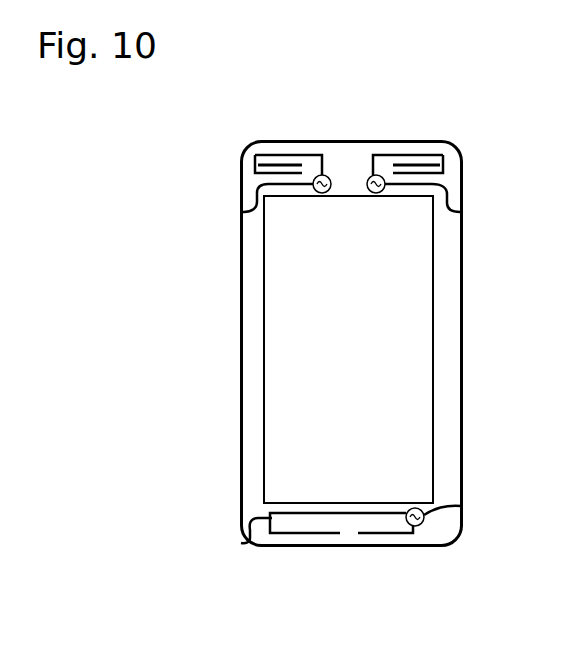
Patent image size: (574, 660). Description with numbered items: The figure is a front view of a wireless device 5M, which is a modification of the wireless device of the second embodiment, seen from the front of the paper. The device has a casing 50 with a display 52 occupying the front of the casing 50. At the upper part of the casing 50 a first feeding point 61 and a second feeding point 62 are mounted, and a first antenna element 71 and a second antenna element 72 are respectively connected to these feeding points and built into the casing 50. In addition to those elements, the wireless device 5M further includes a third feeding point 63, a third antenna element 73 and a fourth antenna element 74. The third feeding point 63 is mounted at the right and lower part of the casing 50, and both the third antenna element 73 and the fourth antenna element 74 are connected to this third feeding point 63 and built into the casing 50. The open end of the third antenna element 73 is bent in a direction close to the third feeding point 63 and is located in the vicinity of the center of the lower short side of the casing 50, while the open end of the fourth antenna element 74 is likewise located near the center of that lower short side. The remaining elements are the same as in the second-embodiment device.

The wireless device 5M is at (372, 47).
The casing 50 is at (343, 141).
The display 52 is at (264, 350).
The first feeding point 61 is at (240, 212).
The second feeding point 62 is at (463, 212).
The third feeding point 63 is at (461, 506).
The first antenna element 71 is at (295, 155).
The second antenna element 72 is at (418, 155).
The third antenna element 73 is at (241, 543).
The fourth antenna element 74 is at (377, 546).